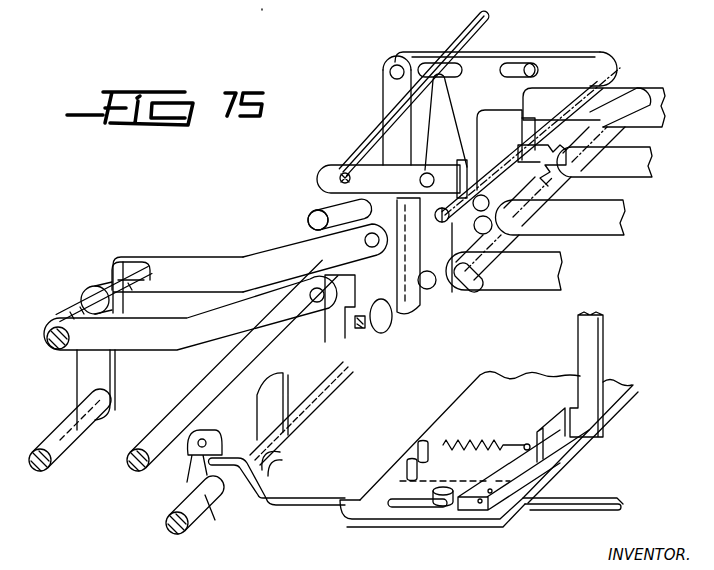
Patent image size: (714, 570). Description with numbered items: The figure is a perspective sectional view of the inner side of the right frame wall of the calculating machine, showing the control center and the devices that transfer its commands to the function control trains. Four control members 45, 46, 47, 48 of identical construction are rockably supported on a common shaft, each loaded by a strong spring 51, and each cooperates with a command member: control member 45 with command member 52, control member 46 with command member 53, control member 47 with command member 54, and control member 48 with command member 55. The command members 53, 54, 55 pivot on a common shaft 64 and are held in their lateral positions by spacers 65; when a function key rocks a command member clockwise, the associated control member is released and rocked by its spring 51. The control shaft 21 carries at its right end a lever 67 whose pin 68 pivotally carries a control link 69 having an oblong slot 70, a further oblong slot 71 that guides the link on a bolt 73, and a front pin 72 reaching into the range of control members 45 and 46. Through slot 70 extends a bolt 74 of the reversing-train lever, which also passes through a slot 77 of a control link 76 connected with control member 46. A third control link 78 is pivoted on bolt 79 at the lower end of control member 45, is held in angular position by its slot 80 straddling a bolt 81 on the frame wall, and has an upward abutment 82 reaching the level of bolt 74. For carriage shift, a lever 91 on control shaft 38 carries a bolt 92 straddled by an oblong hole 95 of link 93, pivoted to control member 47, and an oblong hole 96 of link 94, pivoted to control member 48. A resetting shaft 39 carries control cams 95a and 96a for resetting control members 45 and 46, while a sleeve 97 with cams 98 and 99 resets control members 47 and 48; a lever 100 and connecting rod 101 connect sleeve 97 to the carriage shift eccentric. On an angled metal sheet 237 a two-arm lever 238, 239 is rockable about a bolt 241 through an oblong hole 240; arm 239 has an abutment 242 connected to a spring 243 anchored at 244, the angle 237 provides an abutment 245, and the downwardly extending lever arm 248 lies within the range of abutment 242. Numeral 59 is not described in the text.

The frame 59 is at (265, 5).
The oblong slot 70 is at (422, 62).
The control link 69 is at (535, 55).
The pin 68 is at (390, 60).
The lever 67 is at (383, 99).
The bolt 74 is at (462, 40).
The oblong slot 71 is at (513, 62).
The bolt 73 is at (535, 66).
The command member 52 is at (614, 95).
The abutment 82 is at (442, 118).
The control member 45 is at (510, 136).
The pin 72 is at (540, 132).
The spacers 65 is at (525, 228).
The command member 53 is at (637, 168).
The command member 54 is at (600, 228).
The command member 55 is at (530, 295).
The spring 51 is at (542, 165).
The slot 77 is at (343, 172).
The control link 76 is at (395, 180).
The control cam 95a is at (454, 179).
The bolt 79 is at (455, 225).
The control link 78 is at (318, 207).
The bolt 81 is at (310, 222).
The slot 80 is at (320, 238).
The link 93 is at (165, 267).
The oblong hole 95 is at (145, 282).
The bolt 92 is at (125, 283).
The lever 91 is at (90, 286).
The link 94 is at (66, 312).
The oblong hole 96 is at (62, 355).
The control shaft 38 is at (75, 462).
The control shaft 21 is at (185, 392).
The control cam 99 is at (315, 350).
The control member 48 is at (350, 372).
The control member 47 is at (400, 314).
The control member 46 is at (430, 290).
The control cam 96a is at (377, 334).
The shaft 64 is at (472, 293).
The lever 100 is at (172, 533).
The connecting rod 101 is at (190, 483).
The control cam 98 is at (295, 432).
The sleeve 97 is at (268, 462).
The resetting shaft 39 is at (225, 520).
The lever arm 238 is at (326, 497).
The angled metal sheet 237 is at (462, 395).
The lever arm 248 is at (590, 352).
The oblong hole 240 is at (390, 492).
The bolt 241 is at (452, 484).
The spring 243 is at (492, 443).
The spring anchorage 244 is at (422, 442).
The abutment 245 is at (405, 460).
The abutment 242 is at (563, 450).
The lever arm 239 is at (626, 490).